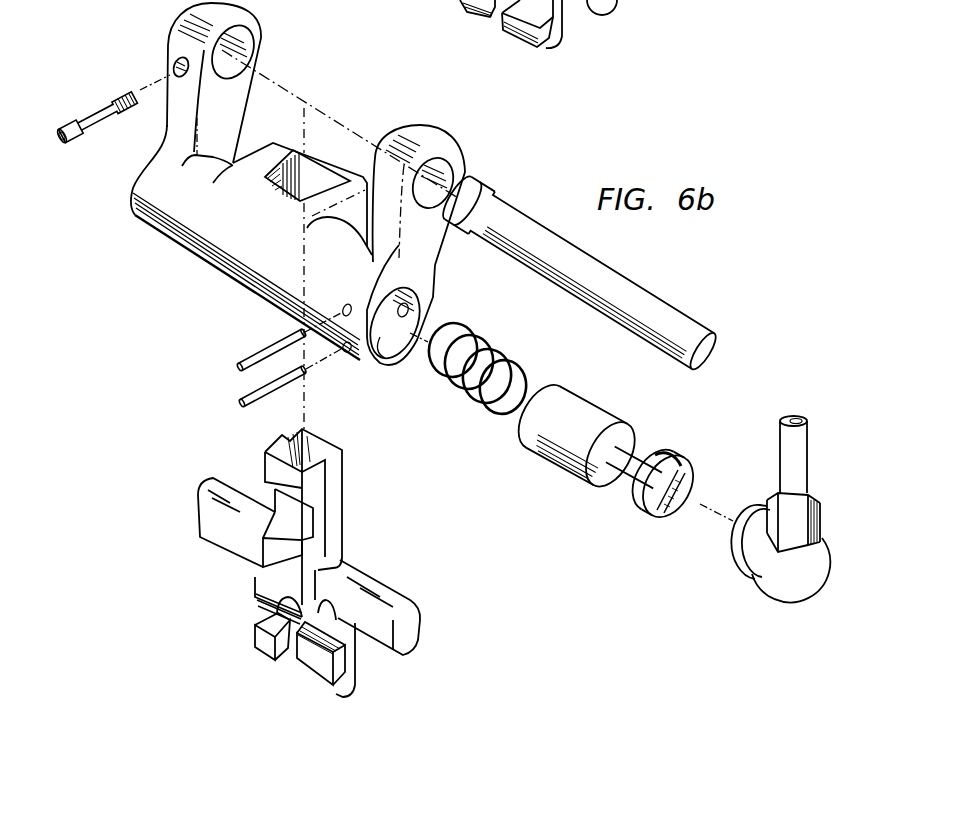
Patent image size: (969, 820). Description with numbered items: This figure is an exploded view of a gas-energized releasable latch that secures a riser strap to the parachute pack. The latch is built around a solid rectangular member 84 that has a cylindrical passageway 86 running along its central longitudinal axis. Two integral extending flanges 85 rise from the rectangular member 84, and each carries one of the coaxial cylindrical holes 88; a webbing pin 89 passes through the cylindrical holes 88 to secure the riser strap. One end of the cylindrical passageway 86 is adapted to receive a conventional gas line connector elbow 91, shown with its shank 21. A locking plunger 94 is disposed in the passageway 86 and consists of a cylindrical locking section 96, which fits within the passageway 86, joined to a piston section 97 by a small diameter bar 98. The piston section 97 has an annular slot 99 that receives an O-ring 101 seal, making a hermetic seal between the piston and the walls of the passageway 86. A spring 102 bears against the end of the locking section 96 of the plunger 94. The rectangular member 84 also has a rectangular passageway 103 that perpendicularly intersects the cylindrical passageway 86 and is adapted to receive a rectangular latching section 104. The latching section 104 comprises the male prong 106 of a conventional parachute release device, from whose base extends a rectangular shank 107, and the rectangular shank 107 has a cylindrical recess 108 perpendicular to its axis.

The rectangular member 84 is at (221, 258).
The extending flanges 85 is at (243, 100).
The cylindrical passageway 86 is at (380, 345).
The cylindrical holes 88 is at (250, 62).
The webbing pin 89 is at (634, 286).
The gas line connector elbow 91 is at (761, 510).
The shank 21 is at (788, 452).
The locking plunger 94 is at (622, 457).
The cylindrical locking section 96 is at (553, 454).
The piston section 97 is at (683, 475).
The small diameter bar 98 is at (652, 438).
The annular slot 99 is at (637, 498).
The O-ring seal 101 is at (682, 452).
The spring 102 is at (481, 343).
The rectangular passageway 103 is at (313, 170).
The rectangular latching section 104 is at (350, 364).
The male prong 106 is at (256, 640).
The rectangular shank 107 is at (323, 488).
The cylindrical recess 108 is at (303, 524).